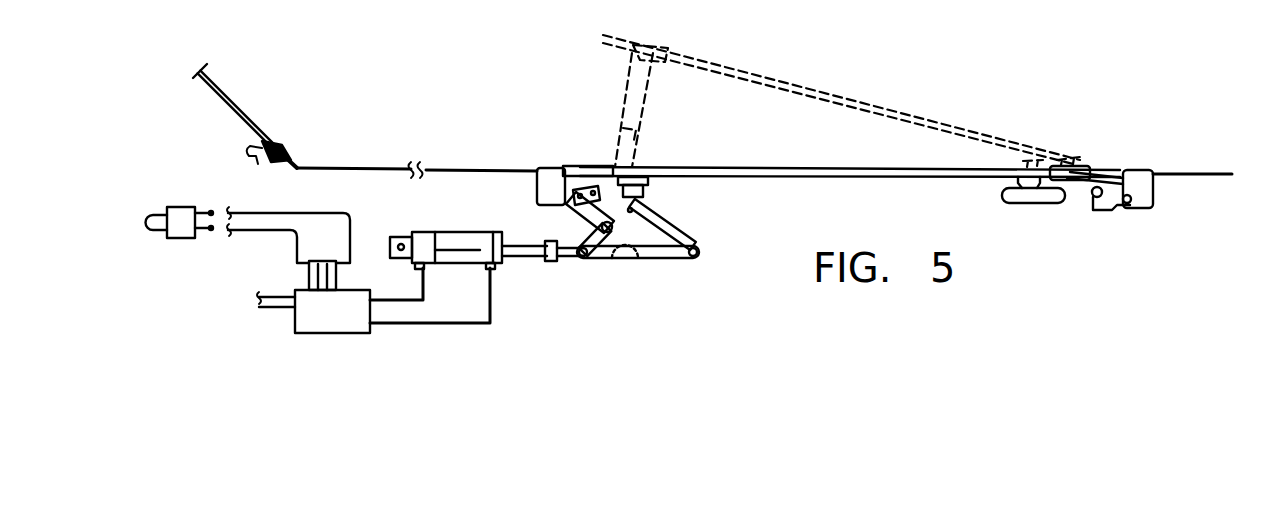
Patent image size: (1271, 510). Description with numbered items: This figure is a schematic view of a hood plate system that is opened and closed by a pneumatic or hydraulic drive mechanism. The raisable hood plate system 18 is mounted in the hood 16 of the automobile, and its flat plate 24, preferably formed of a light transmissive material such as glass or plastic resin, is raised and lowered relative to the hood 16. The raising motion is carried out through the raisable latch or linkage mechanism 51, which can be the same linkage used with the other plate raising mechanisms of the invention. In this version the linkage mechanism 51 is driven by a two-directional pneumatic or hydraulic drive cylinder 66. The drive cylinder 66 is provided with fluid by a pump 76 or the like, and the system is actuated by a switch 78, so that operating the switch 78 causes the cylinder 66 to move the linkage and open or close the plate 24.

The hood 16 is at (1185, 172).
The raisable hood plate system 18 is at (226, 88).
The flat plate 24 is at (777, 168).
The linkage mechanism 51 is at (713, 222).
The two-directional fluid drive cylinder 66 is at (458, 268).
The pump 76 is at (338, 320).
The switch 78 is at (183, 207).